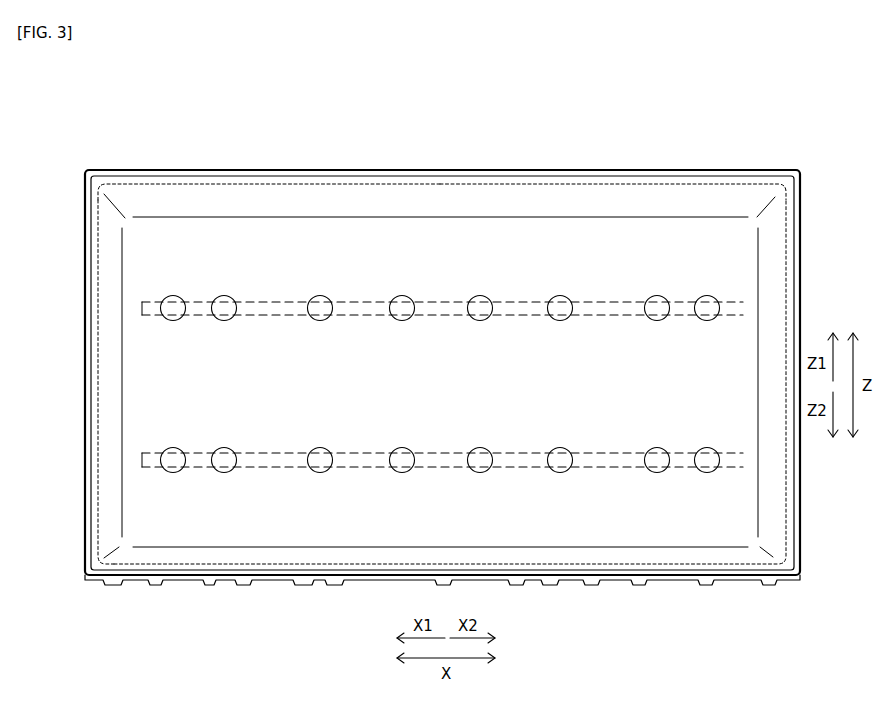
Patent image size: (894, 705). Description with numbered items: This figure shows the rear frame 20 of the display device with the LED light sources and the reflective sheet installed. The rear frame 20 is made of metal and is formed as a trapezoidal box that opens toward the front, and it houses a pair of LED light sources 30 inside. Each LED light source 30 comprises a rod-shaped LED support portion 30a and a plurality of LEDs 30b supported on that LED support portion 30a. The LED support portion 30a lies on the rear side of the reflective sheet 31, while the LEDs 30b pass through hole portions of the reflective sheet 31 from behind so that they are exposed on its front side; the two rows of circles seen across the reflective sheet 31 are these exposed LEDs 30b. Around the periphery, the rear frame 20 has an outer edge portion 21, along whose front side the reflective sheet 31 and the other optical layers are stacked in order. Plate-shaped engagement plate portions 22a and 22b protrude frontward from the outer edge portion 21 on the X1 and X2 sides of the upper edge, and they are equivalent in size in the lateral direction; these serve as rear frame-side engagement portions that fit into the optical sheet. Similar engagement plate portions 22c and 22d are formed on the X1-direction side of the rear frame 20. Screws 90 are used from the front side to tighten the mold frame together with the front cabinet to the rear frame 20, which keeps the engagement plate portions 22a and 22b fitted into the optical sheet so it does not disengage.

The rear frame 20 is at (800, 172).
The outer edge portion 21 is at (87, 172).
The engagement plate portion 22a is at (168, 174).
The engagement plate portion 22b is at (712, 174).
The engagement plate portion 22c is at (89, 243).
The engagement plate portion 22d is at (89, 501).
The LED light source 30 is at (456, 380).
The LED support portion 30a is at (207, 303).
The LED 30b is at (174, 306).
The reflective sheet 31 is at (748, 228).
The screw 90 is at (523, 234).